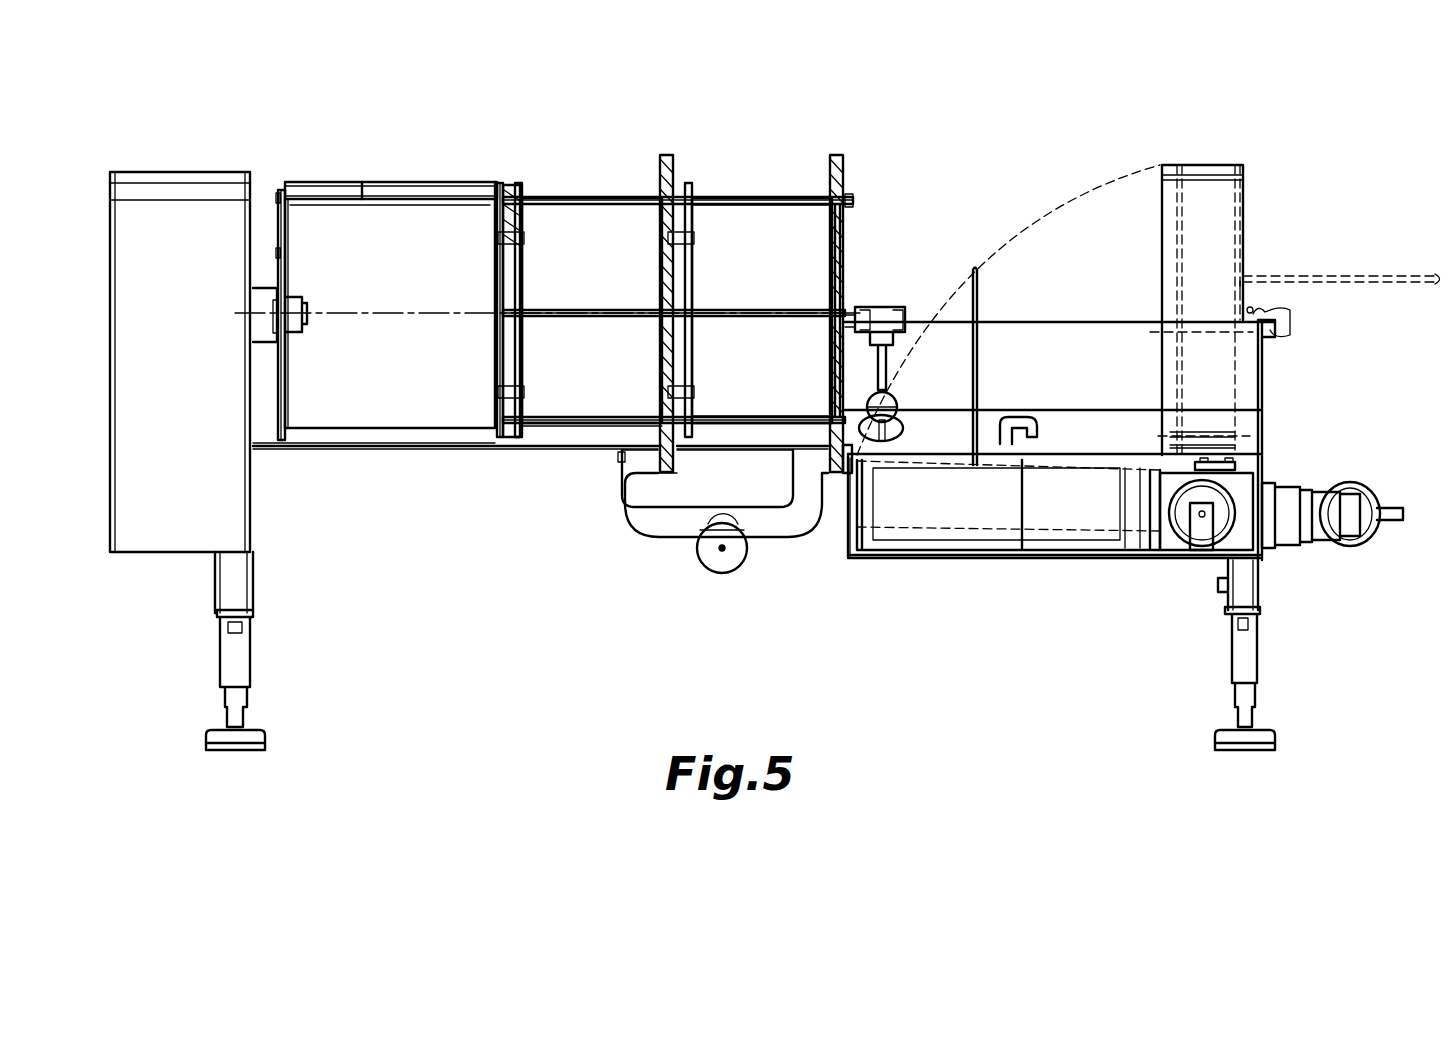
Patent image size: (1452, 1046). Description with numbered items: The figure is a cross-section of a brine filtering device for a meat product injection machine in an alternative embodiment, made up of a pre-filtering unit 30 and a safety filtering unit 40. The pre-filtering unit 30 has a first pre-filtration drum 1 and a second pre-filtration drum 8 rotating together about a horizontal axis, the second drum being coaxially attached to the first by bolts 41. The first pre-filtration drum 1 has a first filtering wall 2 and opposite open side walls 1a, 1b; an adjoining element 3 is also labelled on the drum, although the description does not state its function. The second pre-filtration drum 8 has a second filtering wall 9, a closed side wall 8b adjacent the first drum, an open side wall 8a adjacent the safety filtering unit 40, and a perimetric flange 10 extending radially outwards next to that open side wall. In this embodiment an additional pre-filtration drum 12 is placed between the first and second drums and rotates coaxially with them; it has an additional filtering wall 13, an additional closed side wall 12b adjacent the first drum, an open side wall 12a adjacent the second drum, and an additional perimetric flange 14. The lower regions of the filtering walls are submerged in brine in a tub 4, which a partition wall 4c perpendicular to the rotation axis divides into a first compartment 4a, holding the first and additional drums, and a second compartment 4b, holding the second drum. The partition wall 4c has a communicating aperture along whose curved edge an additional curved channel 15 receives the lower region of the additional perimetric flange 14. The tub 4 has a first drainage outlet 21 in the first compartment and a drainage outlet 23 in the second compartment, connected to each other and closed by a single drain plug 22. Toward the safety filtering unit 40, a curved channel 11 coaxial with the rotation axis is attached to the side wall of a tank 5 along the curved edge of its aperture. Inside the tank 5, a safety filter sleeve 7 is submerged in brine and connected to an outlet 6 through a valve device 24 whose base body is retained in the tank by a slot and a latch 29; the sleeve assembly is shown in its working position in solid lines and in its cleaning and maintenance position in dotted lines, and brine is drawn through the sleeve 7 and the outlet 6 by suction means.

The first pre-filtration drum 1 is at (428, 222).
The open side wall 1a is at (497, 363).
The open side wall 1b is at (285, 388).
The first filtering wall 2 is at (363, 188).
The lid section 3 is at (330, 188).
The tub 4 is at (442, 452).
The first compartment 4a is at (415, 445).
The second compartment 4b is at (753, 443).
The partition wall 4c is at (652, 436).
The tank 5 is at (1075, 558).
The outlet 6 is at (1328, 527).
The safety filter sleeve 7 is at (941, 512).
The second pre-filtration drum 8 is at (773, 227).
The open side wall 8a is at (840, 243).
The closed side wall 8b is at (693, 372).
The second filtering wall 9 is at (728, 195).
The perimetric flange 10 is at (842, 170).
The curved channel 11 is at (842, 473).
The additional pre-filtration drum 12 is at (603, 225).
The open side wall 12a is at (663, 363).
The additional closed side wall 12b is at (518, 288).
The additional filtering wall 13 is at (558, 197).
The additional perimetric flange 14 is at (672, 170).
The additional curved channel 15 is at (660, 470).
The first drainage outlet 21 is at (623, 460).
The drain plug 22 is at (713, 558).
The drainage outlet 23 is at (780, 523).
The valve device 24 is at (1183, 527).
The latch 29 is at (1220, 467).
The pre-filtering unit 30 is at (518, 107).
The safety filtering unit 40 is at (1110, 290).
The bolts 41 is at (693, 240).